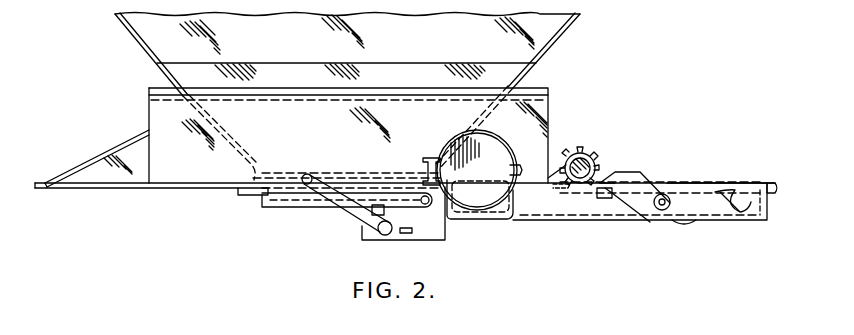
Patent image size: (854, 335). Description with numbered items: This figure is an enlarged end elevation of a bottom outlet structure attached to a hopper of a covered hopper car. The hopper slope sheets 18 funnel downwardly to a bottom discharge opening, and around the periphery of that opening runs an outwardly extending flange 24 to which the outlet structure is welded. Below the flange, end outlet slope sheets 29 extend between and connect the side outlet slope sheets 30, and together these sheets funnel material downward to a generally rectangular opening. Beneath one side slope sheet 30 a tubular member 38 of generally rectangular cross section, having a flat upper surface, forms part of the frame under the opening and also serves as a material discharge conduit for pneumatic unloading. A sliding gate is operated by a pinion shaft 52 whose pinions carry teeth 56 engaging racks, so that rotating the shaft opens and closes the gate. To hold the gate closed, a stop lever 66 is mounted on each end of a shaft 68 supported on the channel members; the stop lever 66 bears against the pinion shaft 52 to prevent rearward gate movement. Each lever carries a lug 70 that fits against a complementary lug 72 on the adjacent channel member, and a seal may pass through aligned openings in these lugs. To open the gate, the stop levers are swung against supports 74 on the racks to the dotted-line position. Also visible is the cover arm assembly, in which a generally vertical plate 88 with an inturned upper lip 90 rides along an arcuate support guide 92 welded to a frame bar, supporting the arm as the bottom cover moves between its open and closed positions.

The hopper slope sheet 18 is at (138, 42).
The outwardly extending flange 24 is at (540, 88).
The end outlet slope sheet 29 is at (331, 140).
The side outlet slope sheet 30 is at (213, 126).
The tubular member 38 is at (499, 224).
The pinion shaft 52 is at (576, 152).
The teeth 56 is at (594, 156).
The stop lever 66 is at (642, 172).
The shaft 68 is at (660, 212).
The lug 70 is at (605, 188).
The complementary lug 72 is at (598, 198).
The support 74 is at (745, 214).
The vertical plate 88 is at (427, 240).
The inturned upper lip 90 is at (392, 178).
The arcuate support guide 92 is at (100, 188).